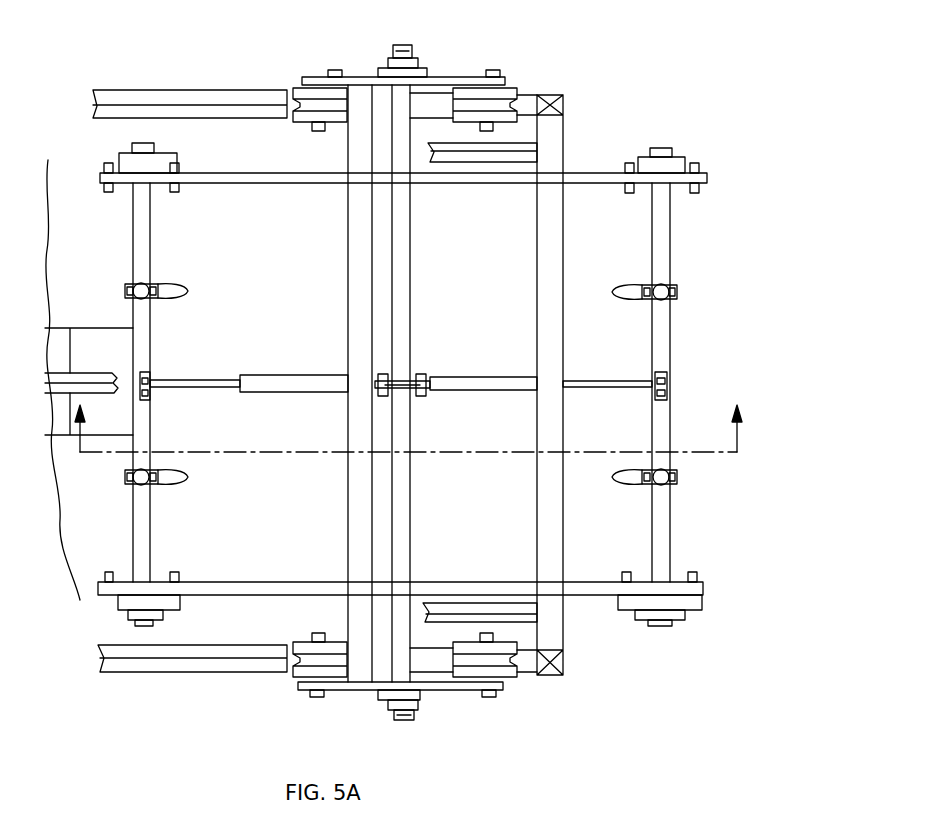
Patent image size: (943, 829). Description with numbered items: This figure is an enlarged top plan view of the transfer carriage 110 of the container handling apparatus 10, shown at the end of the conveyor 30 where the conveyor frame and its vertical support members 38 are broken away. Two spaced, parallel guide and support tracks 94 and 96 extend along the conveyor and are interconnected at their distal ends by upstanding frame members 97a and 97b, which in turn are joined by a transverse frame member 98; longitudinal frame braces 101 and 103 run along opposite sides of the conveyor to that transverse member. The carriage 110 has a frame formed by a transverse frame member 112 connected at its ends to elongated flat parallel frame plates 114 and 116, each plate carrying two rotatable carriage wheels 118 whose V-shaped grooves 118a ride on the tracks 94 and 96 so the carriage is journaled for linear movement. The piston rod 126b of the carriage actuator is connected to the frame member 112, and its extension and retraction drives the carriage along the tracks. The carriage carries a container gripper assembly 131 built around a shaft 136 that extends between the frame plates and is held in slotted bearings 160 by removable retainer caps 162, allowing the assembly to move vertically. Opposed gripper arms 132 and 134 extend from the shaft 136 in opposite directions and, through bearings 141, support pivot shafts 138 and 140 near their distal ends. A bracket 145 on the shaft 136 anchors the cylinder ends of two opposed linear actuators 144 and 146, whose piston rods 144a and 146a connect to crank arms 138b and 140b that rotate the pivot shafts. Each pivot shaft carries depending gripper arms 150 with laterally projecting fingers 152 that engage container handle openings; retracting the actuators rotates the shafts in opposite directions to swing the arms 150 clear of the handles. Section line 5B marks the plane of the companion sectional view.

The apparatus 10 is at (655, 100).
The conveyor 30 is at (75, 600).
The vertical support members 38 is at (84, 297).
The guide and support track 94 is at (212, 672).
The guide and support track 96 is at (185, 90).
The upstanding frame member 97a is at (563, 672).
The upstanding frame member 97b is at (560, 95).
The transverse frame member 98 is at (537, 285).
The longitudinal frame brace 101 is at (455, 603).
The longitudinal frame brace 103 is at (460, 162).
The carriage 110 is at (725, 210).
The transverse frame member 112 is at (348, 265).
The frame plate 114 is at (328, 690).
The frame plate 116 is at (336, 77).
The carriage wheel 118 is at (470, 88).
The V-shaped groove 118a is at (522, 95).
The piston rod 126b is at (78, 373).
The container gripper assembly 131 is at (668, 623).
The gripper arm 132 is at (208, 582).
The gripper arm 134 is at (195, 183).
The shaft 136 is at (410, 465).
The pivot shaft 138 is at (140, 410).
The crank arm 138b is at (150, 372).
The pivot shaft 140 is at (670, 335).
The crank arm 140b is at (655, 395).
The bearing 141 is at (132, 148).
The linear actuator 144 is at (270, 380).
The piston rod 144a is at (205, 392).
The bracket 145 is at (395, 378).
The linear actuator 146 is at (445, 390).
The piston rod 146a is at (580, 381).
The gripper arm 150 is at (125, 290).
The finger or hook portion 152 is at (188, 295).
The bearing 160 is at (392, 58).
The retainer cap 162 is at (412, 52).
The section line 5B is at (408, 426).